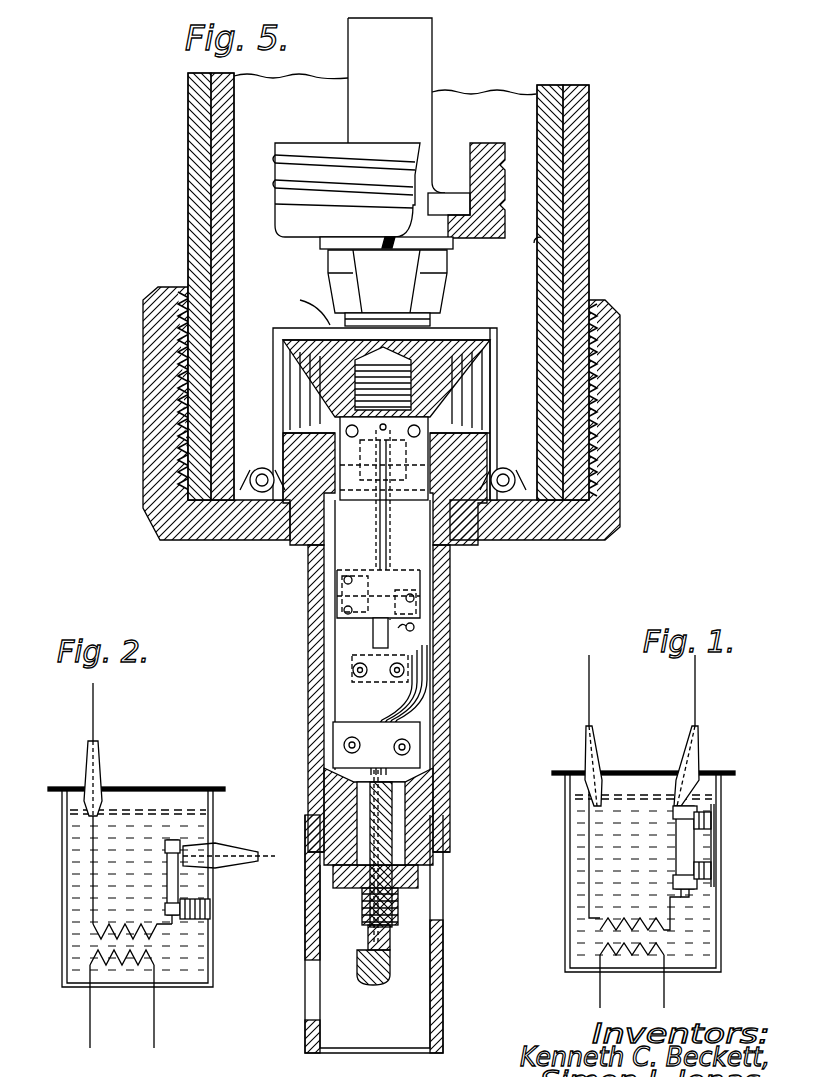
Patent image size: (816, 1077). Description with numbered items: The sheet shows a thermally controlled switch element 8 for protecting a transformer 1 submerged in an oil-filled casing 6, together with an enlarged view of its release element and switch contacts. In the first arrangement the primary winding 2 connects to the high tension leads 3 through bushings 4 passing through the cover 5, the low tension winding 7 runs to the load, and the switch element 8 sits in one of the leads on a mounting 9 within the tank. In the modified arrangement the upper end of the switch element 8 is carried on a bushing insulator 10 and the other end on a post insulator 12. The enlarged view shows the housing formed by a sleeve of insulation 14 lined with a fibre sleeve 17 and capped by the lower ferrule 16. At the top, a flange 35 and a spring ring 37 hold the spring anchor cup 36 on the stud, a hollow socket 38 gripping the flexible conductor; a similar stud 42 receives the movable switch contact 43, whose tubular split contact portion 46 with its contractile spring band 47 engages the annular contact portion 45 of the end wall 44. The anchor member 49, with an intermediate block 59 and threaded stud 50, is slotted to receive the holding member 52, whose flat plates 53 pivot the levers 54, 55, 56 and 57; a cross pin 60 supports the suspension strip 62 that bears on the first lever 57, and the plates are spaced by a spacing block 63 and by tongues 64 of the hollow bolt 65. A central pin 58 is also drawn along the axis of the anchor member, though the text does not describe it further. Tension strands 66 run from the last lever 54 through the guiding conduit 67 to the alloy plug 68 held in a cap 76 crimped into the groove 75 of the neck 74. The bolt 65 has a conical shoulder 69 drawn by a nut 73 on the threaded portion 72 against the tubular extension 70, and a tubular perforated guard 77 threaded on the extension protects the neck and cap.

In FIG. 2, the transformer 1 is at (75, 938).
In FIG. 1, the transformer 1 is at (583, 930).
In FIG. 2, the primary winding 2 is at (118, 925).
In FIG. 1, the primary winding 2 is at (636, 918).
In FIG. 2, the high tension leads 3 is at (97, 704).
In FIG. 1, the high tension leads 3 is at (690, 680).
In FIG. 2, the bushings 4 is at (100, 761).
In FIG. 1, the bushings 4 is at (680, 753).
In FIG. 2, the cover 5 is at (128, 790).
In FIG. 1, the cover 5 is at (583, 770).
In FIG. 2, the casing 6 is at (62, 815).
In FIG. 1, the casing 6 is at (565, 830).
In FIG. 2, the low tension winding 7 is at (122, 967).
In FIG. 1, the low tension winding 7 is at (636, 956).
In FIG. 5, the thermally controlled switch element 8 is at (180, 192).
In FIG. 2, the thermally controlled switch element 8 is at (178, 885).
In FIG. 1, the thermally controlled switch element 8 is at (676, 848).
In FIG. 1, the mounting 9 is at (714, 848).
In FIG. 2, the bushing insulator 10 is at (234, 848).
In FIG. 2, the post insulator 12 is at (210, 910).
In FIG. 5, the sleeve of insulation 14 is at (578, 206).
In FIG. 5, the lower fitting or ferrule 16 is at (600, 350).
In FIG. 5, the fibre sleeve 17 is at (541, 240).
In FIG. 5, the flange 35 is at (467, 200).
In FIG. 5, the spring anchor cup 36 is at (280, 218).
In FIG. 5, the spring ring 37 is at (455, 244).
In FIG. 5, the hollow socket 38 is at (418, 49).
In FIG. 5, the stud 42 is at (432, 286).
In FIG. 5, the movable switch contact 43 is at (306, 302).
In FIG. 5, the end wall 44 is at (532, 545).
In FIG. 5, the contact portion 45 is at (468, 445).
In FIG. 5, the tubular split contact portion 46 is at (498, 352).
In FIG. 5, the contractile spring band 47 is at (507, 470).
In FIG. 5, the anchor member 49 is at (345, 555).
In FIG. 5, the threaded stud 50 is at (345, 395).
In FIG. 5, the holding member 52 is at (350, 635).
In FIG. 5, the flat plates 53 is at (335, 693).
In FIG. 5, the lever 54 is at (335, 595).
In FIG. 5, the lever 55 is at (420, 600).
In FIG. 5, the lever 56 is at (330, 625).
In FIG. 5, the lever 57 is at (410, 640).
In FIG. 5, the pin 58 is at (400, 552).
In FIG. 5, the intermediate block 59 is at (305, 548).
In FIG. 5, the cross pin 60 is at (345, 470).
In FIG. 5, the suspension strip or link 62 is at (425, 572).
In FIG. 5, the spacing block 63 is at (350, 663).
In FIG. 5, the tongues 64 is at (333, 738).
In FIG. 5, the anchor stud or bolt 65 is at (390, 812).
In FIG. 5, the tension strands 66 is at (425, 622).
In FIG. 5, the guiding sleeve or conduit 67 is at (420, 670).
In FIG. 5, the button or plug of thermally responsive metal 68 is at (392, 978).
In FIG. 5, the conical shoulder 69 is at (405, 760).
In FIG. 5, the tubular extension 70 is at (315, 757).
In FIG. 5, the threaded portion 72 is at (398, 910).
In FIG. 5, the nut 73 is at (418, 877).
In FIG. 5, the neck portion 74 is at (390, 938).
In FIG. 5, the groove 75 is at (362, 948).
In FIG. 5, the cap 76 is at (380, 988).
In FIG. 5, the tubular perforated guard 77 is at (305, 1035).